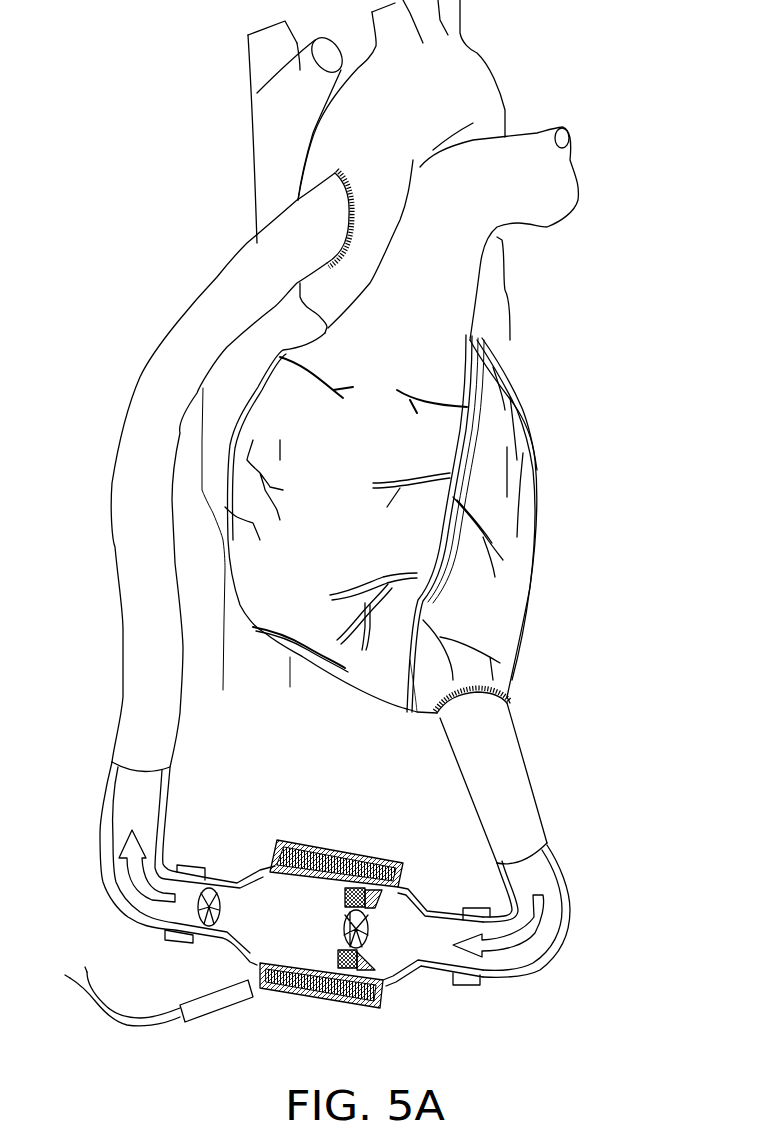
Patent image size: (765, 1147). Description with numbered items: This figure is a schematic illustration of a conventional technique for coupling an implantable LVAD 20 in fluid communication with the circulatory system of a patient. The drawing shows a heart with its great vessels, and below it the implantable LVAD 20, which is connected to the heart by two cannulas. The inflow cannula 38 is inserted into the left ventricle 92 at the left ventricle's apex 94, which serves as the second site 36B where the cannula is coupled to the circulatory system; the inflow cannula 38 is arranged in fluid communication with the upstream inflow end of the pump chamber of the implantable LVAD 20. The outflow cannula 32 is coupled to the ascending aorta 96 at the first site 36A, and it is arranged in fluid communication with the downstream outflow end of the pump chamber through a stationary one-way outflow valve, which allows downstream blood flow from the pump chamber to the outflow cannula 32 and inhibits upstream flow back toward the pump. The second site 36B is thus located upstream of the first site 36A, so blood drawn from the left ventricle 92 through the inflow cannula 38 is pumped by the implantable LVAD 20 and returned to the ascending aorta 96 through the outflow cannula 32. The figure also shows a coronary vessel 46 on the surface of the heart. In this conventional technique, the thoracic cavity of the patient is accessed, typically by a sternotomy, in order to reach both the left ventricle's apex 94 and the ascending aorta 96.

The implantable LVAD 20 is at (398, 993).
The outflow cannula 32 is at (120, 547).
The first site 36A is at (352, 176).
The second site 36B is at (432, 724).
The inflow cannula 38 is at (508, 793).
The coronary artery 46 is at (540, 393).
The left ventricle 92 is at (522, 542).
The apex 94 is at (520, 693).
The ascending aorta 96 is at (367, 128).